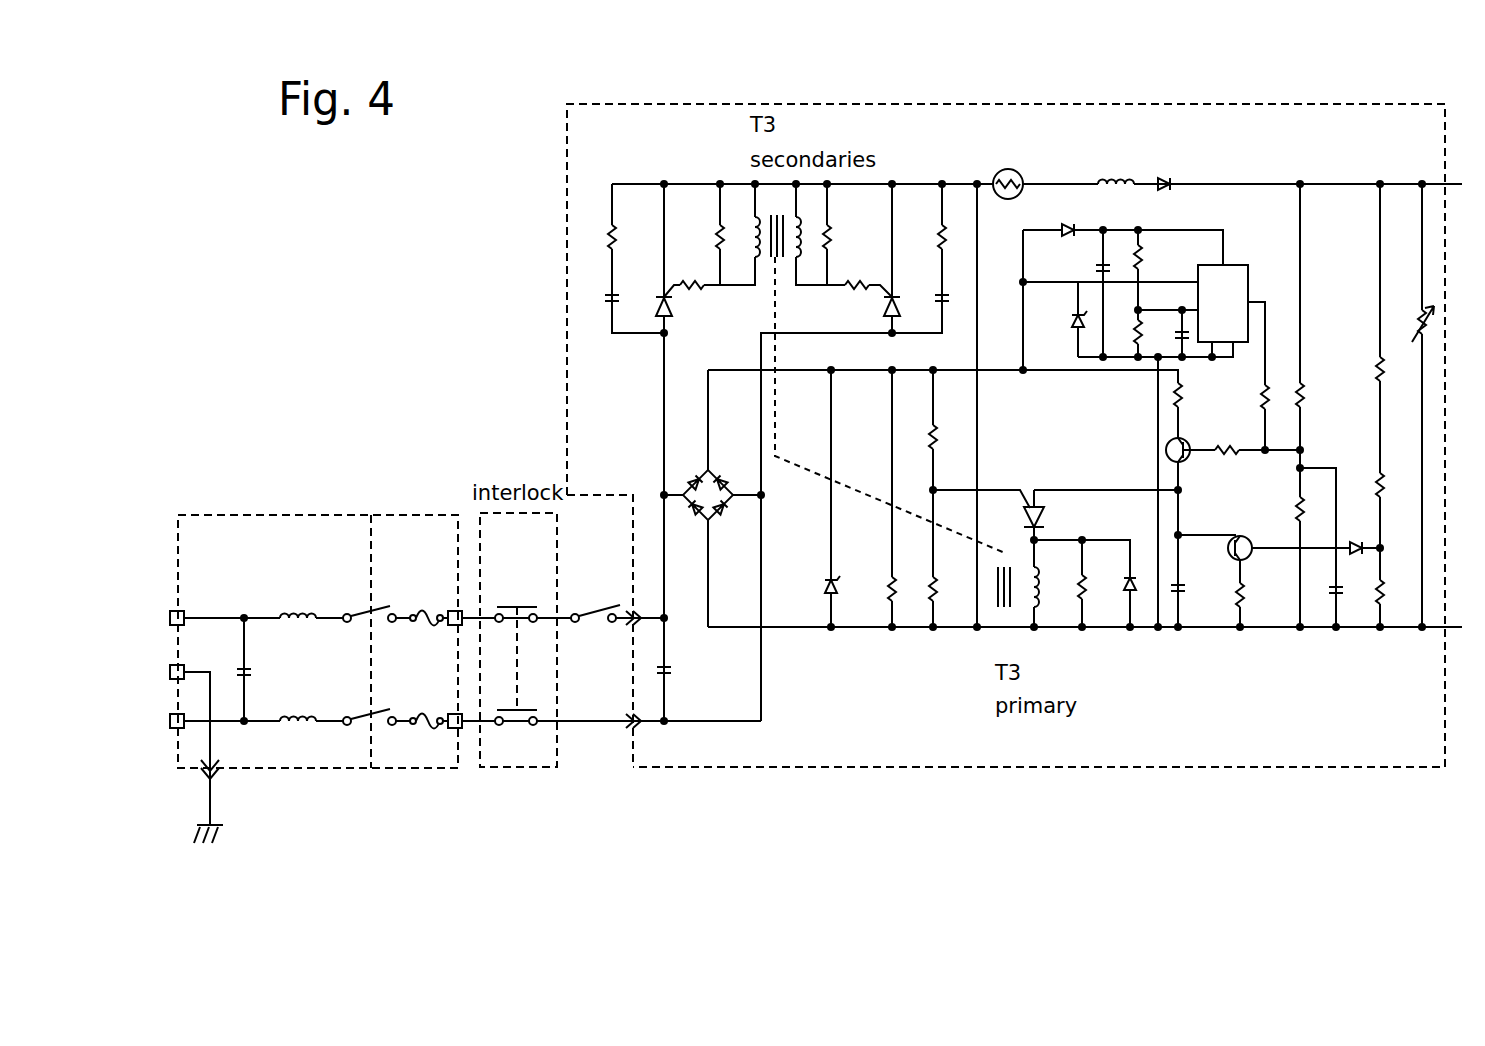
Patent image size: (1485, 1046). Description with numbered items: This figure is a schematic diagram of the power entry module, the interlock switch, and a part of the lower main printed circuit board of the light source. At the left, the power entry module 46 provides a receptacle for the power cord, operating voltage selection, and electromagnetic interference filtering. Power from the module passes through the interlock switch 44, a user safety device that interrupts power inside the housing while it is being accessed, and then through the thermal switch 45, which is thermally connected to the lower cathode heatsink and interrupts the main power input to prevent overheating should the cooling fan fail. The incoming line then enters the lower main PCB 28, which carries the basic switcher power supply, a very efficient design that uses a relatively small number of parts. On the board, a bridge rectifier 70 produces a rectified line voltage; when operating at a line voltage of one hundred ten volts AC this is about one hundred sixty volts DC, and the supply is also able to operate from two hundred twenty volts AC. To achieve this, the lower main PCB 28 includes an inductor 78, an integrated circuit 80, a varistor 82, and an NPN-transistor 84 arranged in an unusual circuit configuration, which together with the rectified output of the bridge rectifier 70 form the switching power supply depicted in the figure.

The lower main printed circuit board 28 is at (732, 104).
The interlock switch 44 is at (557, 548).
The thermal switch 45 is at (597, 617).
The power entry module 46 is at (384, 515).
The bridge rectifier 70 is at (716, 465).
The inductor 78 is at (1112, 178).
The integrated circuit 80 is at (1237, 265).
The varistor 82 is at (1420, 316).
The NPN-transistor 84 is at (1244, 536).